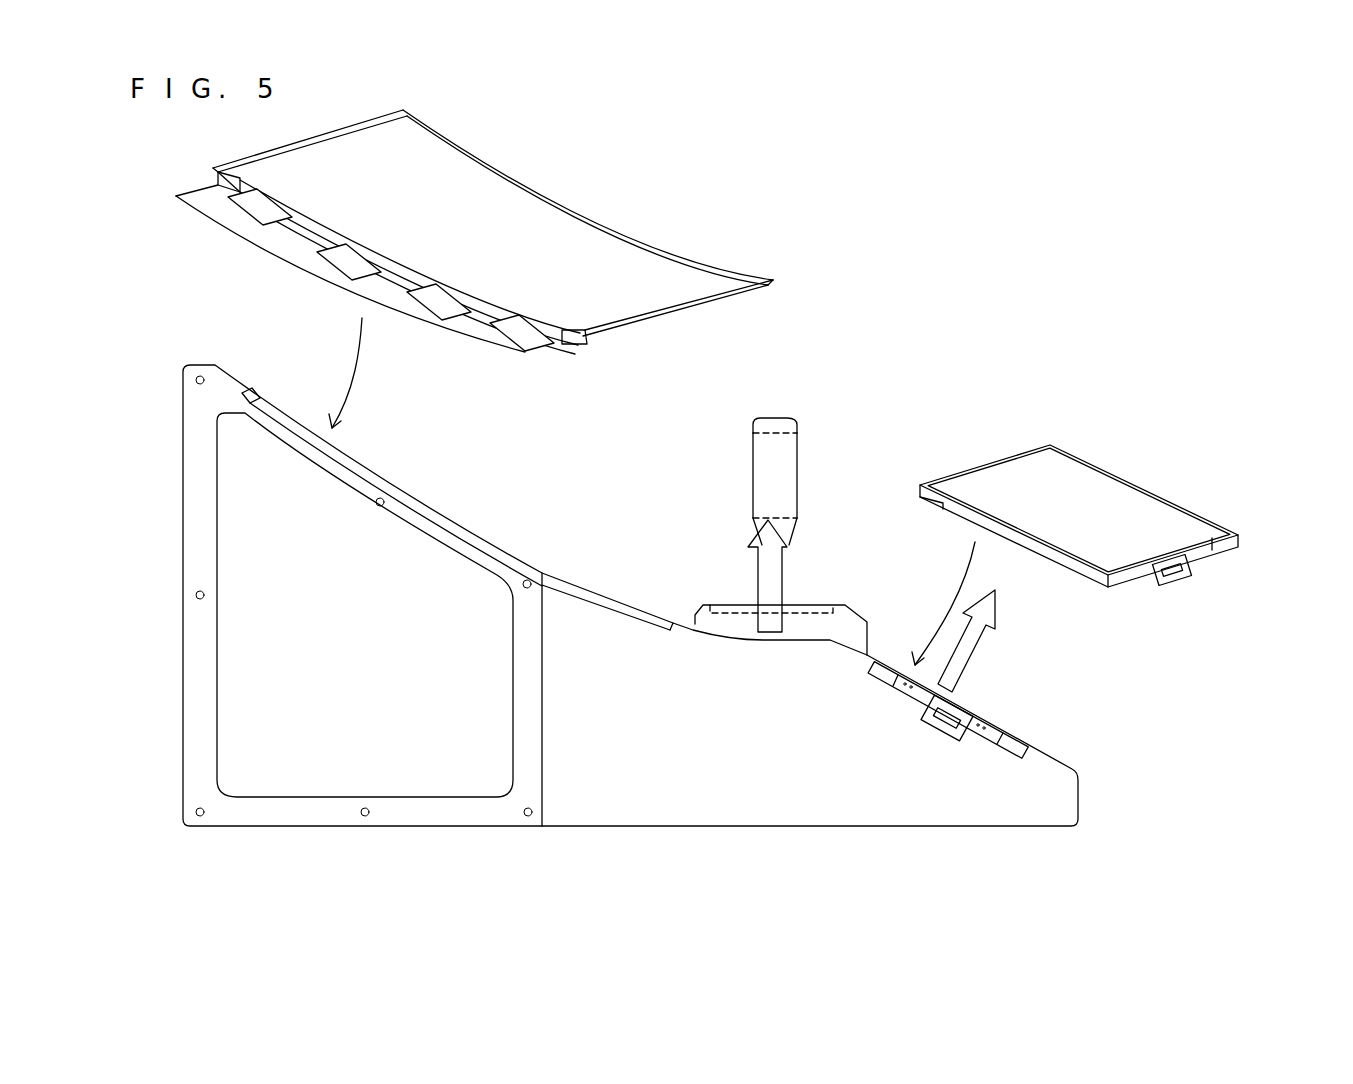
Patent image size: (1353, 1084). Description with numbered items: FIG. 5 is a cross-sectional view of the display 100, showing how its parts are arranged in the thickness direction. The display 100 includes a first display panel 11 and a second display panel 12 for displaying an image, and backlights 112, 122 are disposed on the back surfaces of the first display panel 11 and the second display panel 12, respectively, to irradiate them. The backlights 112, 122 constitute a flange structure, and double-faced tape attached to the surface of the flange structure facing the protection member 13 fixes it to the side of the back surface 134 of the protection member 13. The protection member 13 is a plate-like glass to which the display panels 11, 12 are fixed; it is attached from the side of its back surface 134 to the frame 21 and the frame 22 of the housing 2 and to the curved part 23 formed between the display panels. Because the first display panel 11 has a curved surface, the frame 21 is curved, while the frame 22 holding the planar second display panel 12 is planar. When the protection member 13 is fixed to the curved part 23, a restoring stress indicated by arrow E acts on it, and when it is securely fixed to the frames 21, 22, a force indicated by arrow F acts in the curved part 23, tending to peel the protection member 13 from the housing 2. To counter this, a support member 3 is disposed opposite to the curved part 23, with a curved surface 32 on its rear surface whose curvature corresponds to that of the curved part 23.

The display 100 is at (273, 920).
The housing 2 is at (1060, 808).
The support member 3 is at (733, 623).
The first display panel 11 is at (540, 218).
The backlight 112 is at (772, 277).
The second display panel 12 is at (993, 718).
The backlight 122 is at (1218, 530).
The protection member 13 is at (558, 587).
The back surface 134 is at (623, 607).
The frame 21 is at (383, 483).
The frame 22 is at (1060, 758).
The curved part 23 is at (798, 640).
The curved surface 32 is at (803, 622).